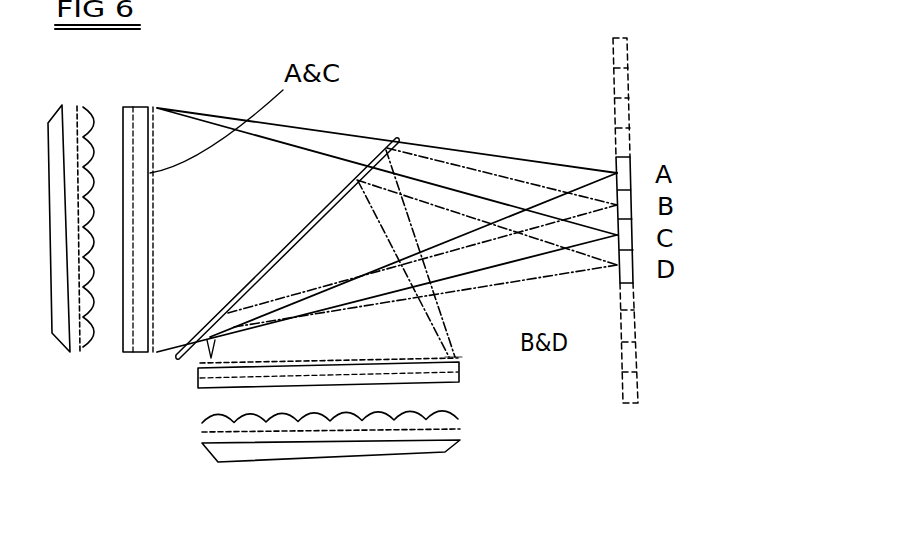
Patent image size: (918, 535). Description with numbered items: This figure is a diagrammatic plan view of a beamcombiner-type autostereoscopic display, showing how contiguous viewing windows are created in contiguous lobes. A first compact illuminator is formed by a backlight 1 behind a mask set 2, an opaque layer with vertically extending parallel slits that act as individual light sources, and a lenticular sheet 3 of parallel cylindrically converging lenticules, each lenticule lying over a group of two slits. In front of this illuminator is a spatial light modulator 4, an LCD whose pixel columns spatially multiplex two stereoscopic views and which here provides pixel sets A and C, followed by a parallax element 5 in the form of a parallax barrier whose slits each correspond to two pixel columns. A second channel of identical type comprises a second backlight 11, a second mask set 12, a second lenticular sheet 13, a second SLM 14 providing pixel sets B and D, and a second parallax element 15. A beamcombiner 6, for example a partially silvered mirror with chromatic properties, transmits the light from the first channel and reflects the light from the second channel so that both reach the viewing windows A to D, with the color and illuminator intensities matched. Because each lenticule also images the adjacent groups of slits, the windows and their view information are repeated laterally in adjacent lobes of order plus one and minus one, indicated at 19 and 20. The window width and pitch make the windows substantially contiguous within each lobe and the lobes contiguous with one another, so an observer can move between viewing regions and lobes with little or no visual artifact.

The backlight 1 is at (58, 113).
The mask set 2 is at (77, 108).
The lenticular sheet 3 is at (84, 107).
The spatial light modulator 4 is at (136, 353).
The parallax element 5 is at (157, 356).
The beamcombiner 6 is at (397, 138).
The second backlight 11 is at (462, 443).
The second mask set 12 is at (460, 430).
The second lenticular sheet 13 is at (461, 421).
The second SLM 14 is at (198, 389).
The second parallax element 15 is at (457, 357).
The adjacent lobe of order +1 19 is at (642, 160).
The adjacent lobe of order −1 20 is at (650, 343).